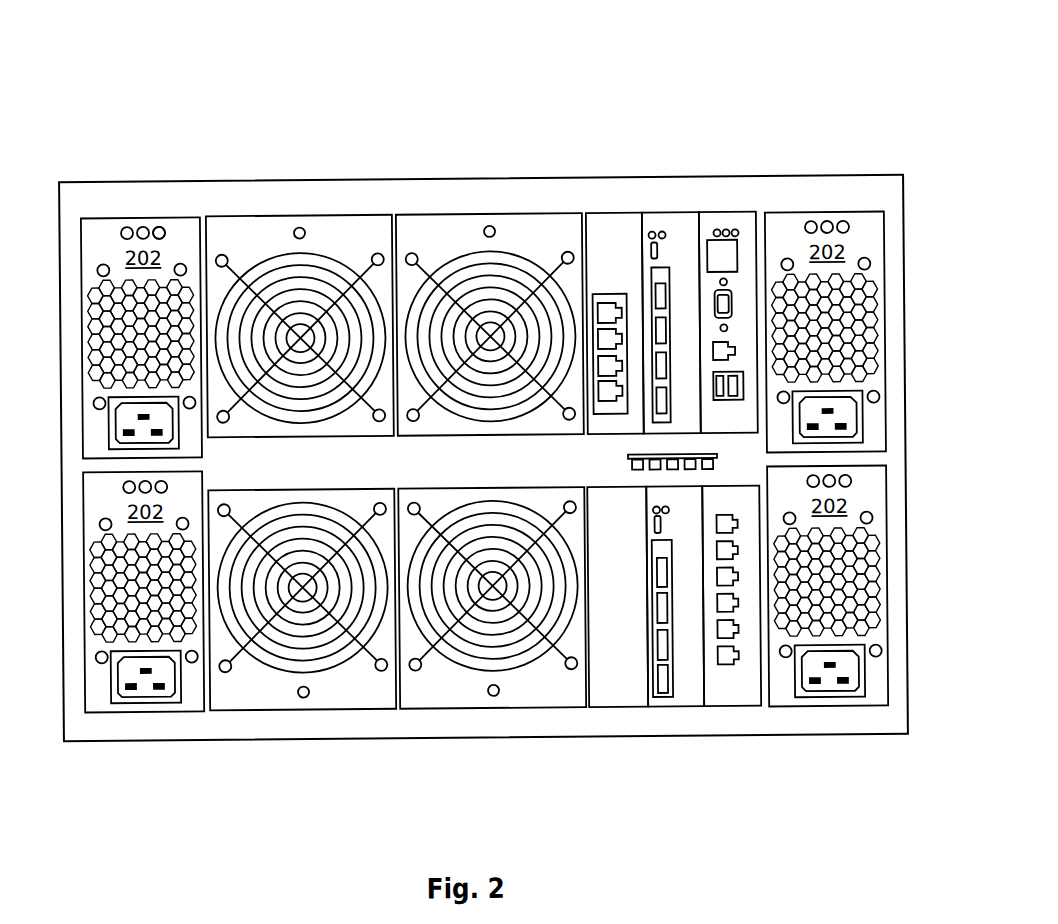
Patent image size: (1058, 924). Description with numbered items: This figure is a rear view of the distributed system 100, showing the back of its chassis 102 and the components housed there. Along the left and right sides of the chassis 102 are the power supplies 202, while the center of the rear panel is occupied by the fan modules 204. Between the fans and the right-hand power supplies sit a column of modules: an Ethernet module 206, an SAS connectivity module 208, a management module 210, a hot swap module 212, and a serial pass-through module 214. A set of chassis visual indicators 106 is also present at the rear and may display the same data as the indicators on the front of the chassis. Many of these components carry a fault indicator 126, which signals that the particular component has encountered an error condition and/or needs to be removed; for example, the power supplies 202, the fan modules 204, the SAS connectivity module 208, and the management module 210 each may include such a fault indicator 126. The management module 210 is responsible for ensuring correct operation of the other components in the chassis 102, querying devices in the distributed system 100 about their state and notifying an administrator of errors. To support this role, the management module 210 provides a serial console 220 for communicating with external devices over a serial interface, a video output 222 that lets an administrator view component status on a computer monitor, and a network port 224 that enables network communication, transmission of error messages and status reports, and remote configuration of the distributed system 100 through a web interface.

The distributed system 100 is at (338, 62).
The chassis 102 is at (106, 205).
The chassis visual indicators 106 is at (673, 456).
The fault indicator 126 is at (496, 459).
The power supplies 202 is at (484, 461).
The fan modules 204 is at (228, 247).
The Ethernet module 206 is at (598, 258).
The SAS connectivity module 208 is at (697, 305).
The management module 210 is at (828, 317).
The hot swap module 212 is at (697, 583).
The serial pass-through module 214 is at (715, 694).
The serial console 220 is at (740, 264).
The video output 222 is at (735, 305).
The network port 224 is at (737, 354).